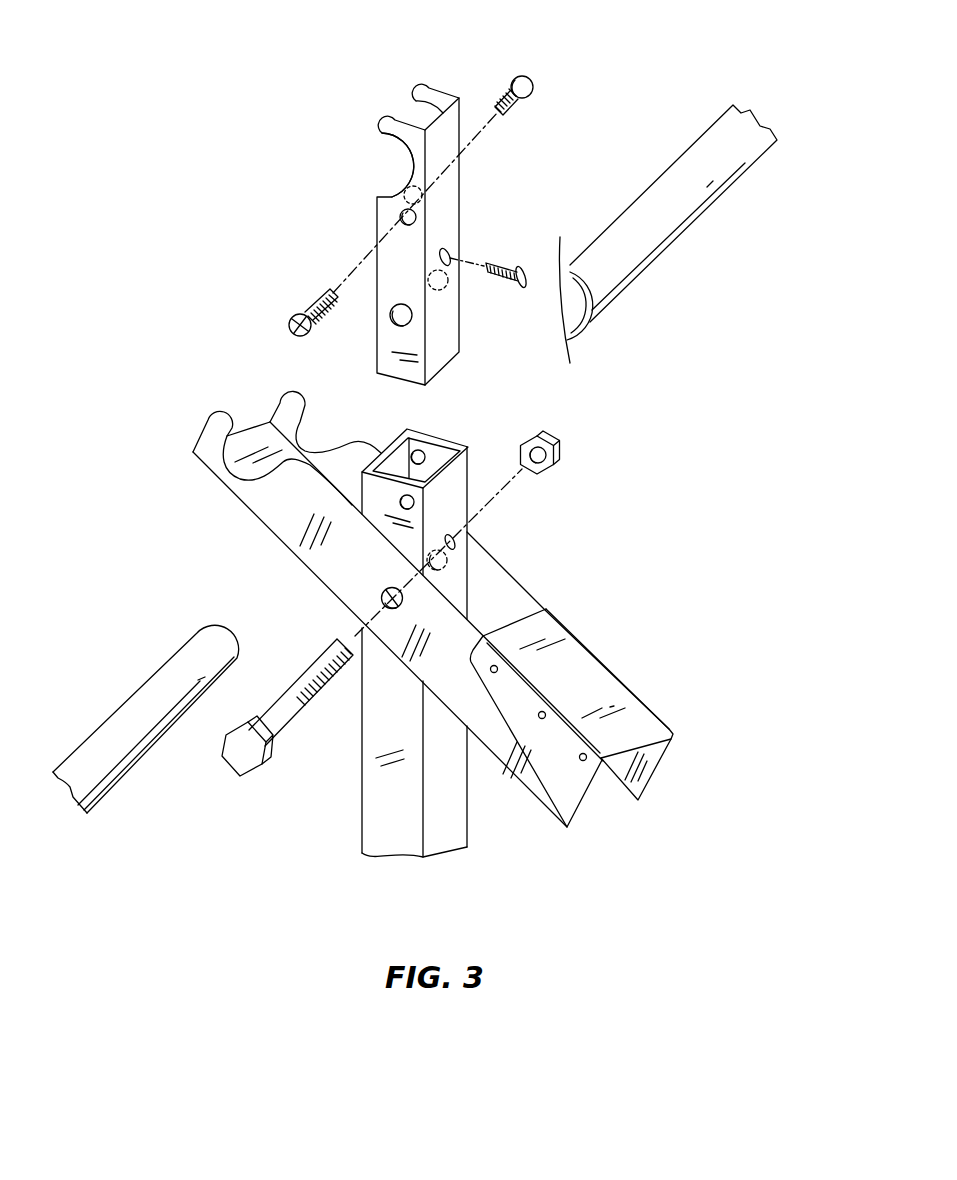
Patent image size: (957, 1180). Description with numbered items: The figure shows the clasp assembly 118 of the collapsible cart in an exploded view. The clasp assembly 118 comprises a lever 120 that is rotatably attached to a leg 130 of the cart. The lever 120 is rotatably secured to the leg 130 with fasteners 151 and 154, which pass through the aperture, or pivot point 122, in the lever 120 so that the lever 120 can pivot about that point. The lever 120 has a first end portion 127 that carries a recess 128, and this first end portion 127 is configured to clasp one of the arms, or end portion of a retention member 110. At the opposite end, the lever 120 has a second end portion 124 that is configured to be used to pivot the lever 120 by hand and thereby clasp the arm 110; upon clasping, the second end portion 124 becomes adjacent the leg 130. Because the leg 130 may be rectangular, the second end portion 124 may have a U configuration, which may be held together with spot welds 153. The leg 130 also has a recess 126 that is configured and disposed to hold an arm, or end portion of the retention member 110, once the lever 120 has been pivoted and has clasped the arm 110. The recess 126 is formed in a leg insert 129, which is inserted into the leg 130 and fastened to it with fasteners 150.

The retention member 110 is at (674, 254).
The clasp assembly 118 is at (589, 411).
The lever 120 is at (584, 687).
The pivot point 122 is at (381, 597).
The second end portion 124 is at (607, 702).
The recess 126 is at (386, 158).
The first end portion 127 is at (212, 432).
The recess 128 is at (356, 594).
The leg insert 129 is at (371, 234).
The leg 130 is at (462, 800).
The fasteners 150 is at (533, 93).
The fastener 151 is at (273, 721).
The spot welds 153 is at (583, 761).
The fastener 154 is at (548, 469).